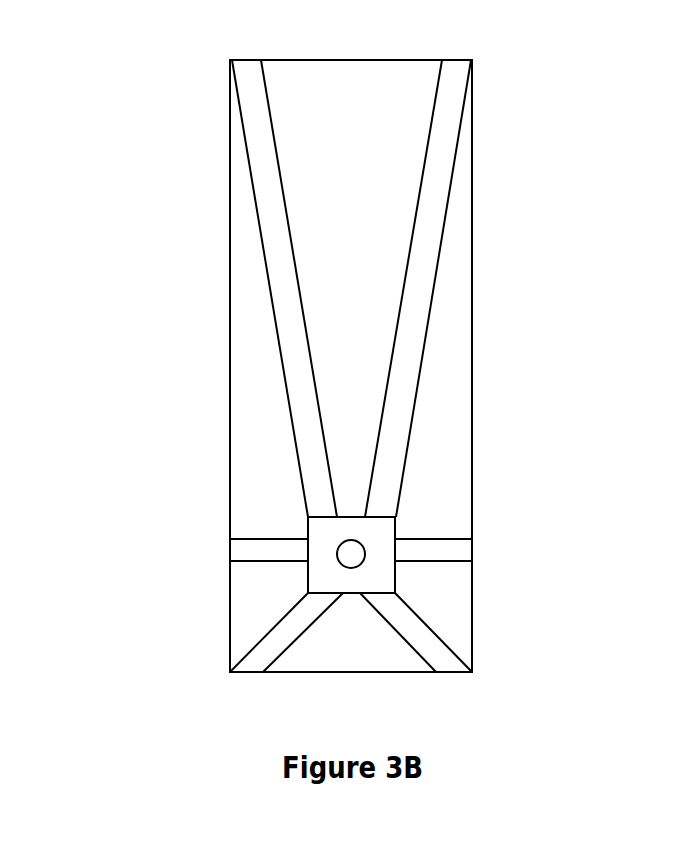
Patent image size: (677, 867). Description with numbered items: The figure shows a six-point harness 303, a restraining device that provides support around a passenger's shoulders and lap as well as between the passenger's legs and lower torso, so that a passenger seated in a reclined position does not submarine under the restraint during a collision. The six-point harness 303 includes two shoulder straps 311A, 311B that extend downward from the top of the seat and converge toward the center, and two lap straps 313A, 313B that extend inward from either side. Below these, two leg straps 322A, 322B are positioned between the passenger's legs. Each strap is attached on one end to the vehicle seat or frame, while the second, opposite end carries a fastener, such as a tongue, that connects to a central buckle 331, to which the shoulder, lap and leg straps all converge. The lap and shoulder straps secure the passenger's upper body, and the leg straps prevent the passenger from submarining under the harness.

The six-point harness 303 is at (383, 700).
The shoulder strap 311A is at (300, 353).
The shoulder strap 311B is at (408, 352).
The buckle 331 is at (308, 532).
The lap strap 313A is at (270, 555).
The lap strap 313B is at (430, 555).
The leg strap 322A is at (275, 638).
The leg strap 322B is at (430, 641).